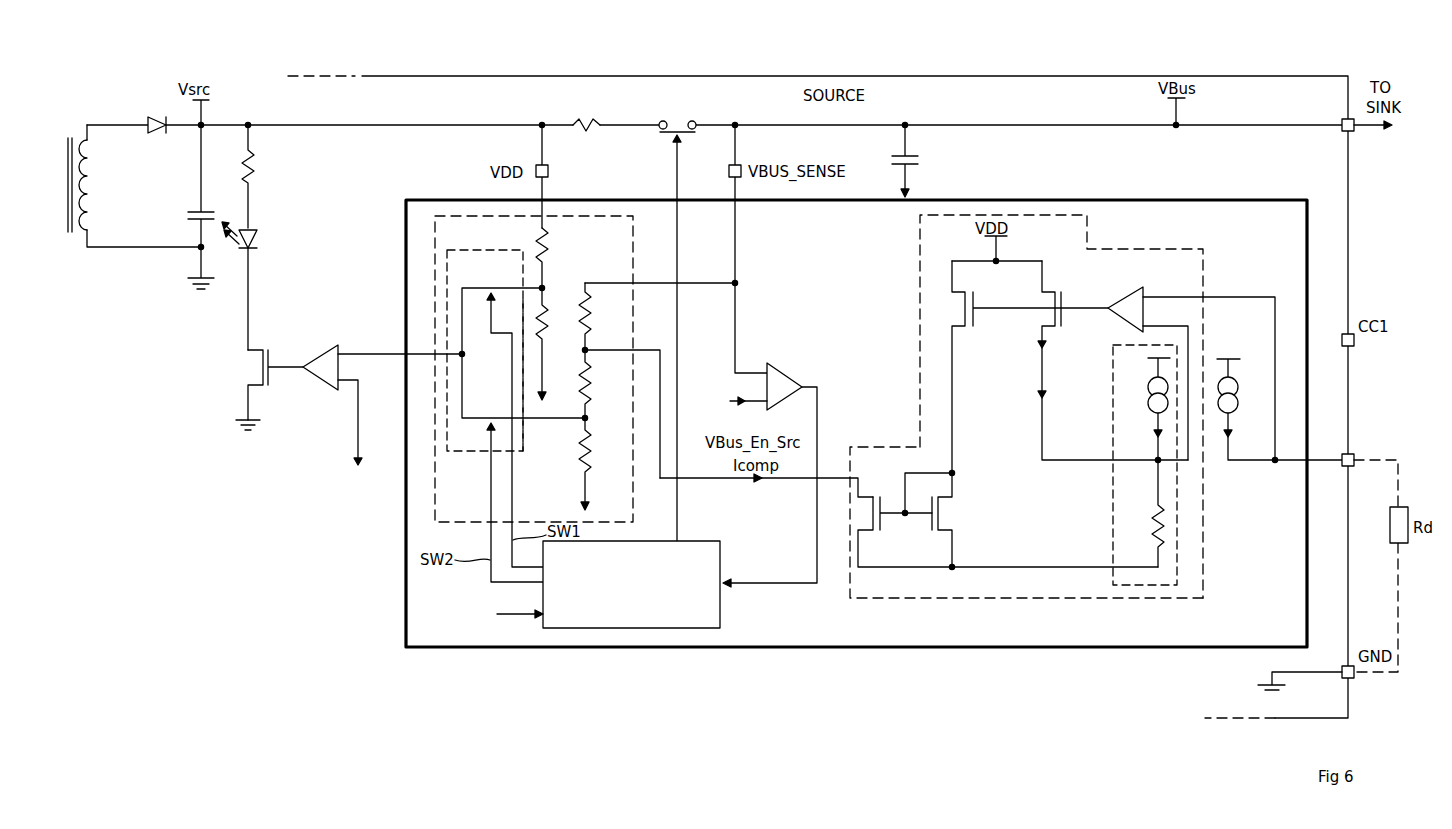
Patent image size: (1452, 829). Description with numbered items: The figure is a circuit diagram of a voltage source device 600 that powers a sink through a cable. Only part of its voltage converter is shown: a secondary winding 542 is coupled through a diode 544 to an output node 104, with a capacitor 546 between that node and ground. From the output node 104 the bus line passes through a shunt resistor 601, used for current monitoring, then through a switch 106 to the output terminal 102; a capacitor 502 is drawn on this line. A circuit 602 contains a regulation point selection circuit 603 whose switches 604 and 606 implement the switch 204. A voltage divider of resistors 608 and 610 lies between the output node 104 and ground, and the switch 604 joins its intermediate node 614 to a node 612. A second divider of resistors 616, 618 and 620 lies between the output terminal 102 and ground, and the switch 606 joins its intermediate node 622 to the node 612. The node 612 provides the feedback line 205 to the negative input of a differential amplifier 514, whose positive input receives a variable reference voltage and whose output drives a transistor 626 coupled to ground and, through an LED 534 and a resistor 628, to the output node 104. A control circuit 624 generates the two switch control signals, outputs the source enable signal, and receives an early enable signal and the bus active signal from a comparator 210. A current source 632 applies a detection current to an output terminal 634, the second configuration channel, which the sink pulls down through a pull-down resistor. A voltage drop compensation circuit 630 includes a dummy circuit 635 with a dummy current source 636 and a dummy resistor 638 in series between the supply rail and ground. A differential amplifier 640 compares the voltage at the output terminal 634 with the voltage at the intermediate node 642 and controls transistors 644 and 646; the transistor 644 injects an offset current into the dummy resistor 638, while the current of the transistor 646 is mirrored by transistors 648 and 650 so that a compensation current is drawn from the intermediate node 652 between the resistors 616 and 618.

The voltage source device 600 is at (1280, 90).
The shunt resistor 601 is at (588, 120).
The circuit 602 is at (1273, 212).
The regulation point selection circuit 603 is at (630, 250).
The switch 604 is at (510, 288).
The switch 606 is at (510, 417).
The resistor 608 is at (548, 246).
The resistor 610 is at (548, 310).
The node 612 is at (464, 354).
The intermediate node 614 is at (540, 286).
The resistor 616 is at (588, 318).
The resistor 618 is at (590, 384).
The resistor 620 is at (590, 468).
The intermediate node 622 is at (583, 416).
The control circuit 624 is at (720, 544).
The transistor 626 is at (250, 350).
The resistor 628 is at (255, 165).
The voltage drop compensation circuit 630 is at (1095, 263).
The current source 632 is at (1240, 388).
The output terminal 634 is at (1350, 468).
The dummy circuit 635 is at (1127, 348).
The dummy current source 636 is at (1149, 403).
The dummy resistor 638 is at (1158, 515).
The differential amplifier 640 is at (1127, 298).
The intermediate node 642 is at (1178, 475).
The transistor 644 is at (1057, 330).
The transistor 646 is at (965, 330).
The transistor 648 is at (945, 511).
The transistor 650 is at (868, 515).
The intermediate node 652 is at (590, 348).
The output terminal 102 is at (1356, 131).
The output node 104 is at (210, 121).
The switch 106 is at (666, 135).
The switch 204 is at (522, 450).
The feedback line 205 is at (380, 352).
The comparator 210 is at (790, 372).
The device 502 is at (920, 160).
The differential amplifier 514 is at (317, 396).
The LED 534 is at (258, 240).
The secondary winding 542 is at (85, 185).
The diode 544 is at (152, 136).
The capacitor 546 is at (196, 210).